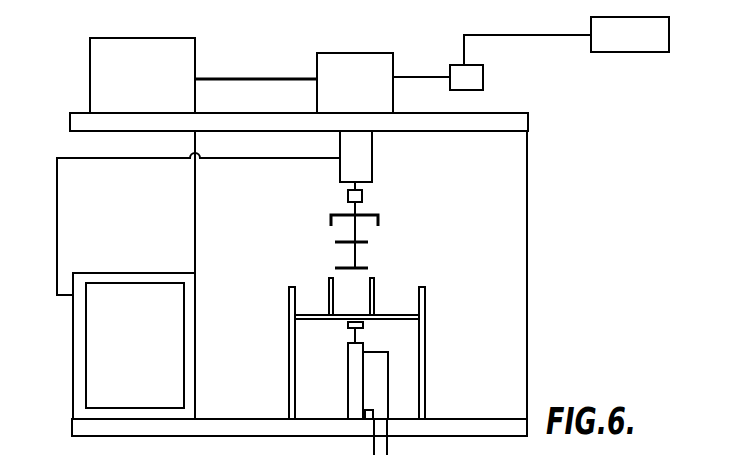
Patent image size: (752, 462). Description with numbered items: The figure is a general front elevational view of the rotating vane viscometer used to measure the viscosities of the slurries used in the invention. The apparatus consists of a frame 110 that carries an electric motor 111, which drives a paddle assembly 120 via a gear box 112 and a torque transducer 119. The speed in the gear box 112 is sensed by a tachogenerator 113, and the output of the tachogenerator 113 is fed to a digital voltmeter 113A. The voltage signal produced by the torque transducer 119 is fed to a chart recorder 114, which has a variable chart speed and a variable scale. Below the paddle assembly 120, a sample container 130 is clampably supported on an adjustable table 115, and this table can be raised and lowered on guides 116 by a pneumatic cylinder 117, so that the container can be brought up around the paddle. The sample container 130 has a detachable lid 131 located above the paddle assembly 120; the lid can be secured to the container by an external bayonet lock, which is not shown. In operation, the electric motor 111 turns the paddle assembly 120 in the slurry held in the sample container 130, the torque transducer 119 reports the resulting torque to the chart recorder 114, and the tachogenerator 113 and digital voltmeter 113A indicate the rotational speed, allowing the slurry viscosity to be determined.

The frame 110 is at (527, 197).
The electric motor 111 is at (144, 38).
The gear box 112 is at (360, 53).
The tachogenerator 113 is at (483, 77).
The digital voltmeter 113A is at (626, 41).
The chart recorder 114 is at (72, 354).
The adjustable table 115 is at (401, 319).
The guides 116 is at (425, 396).
The pneumatic cylinder 117 is at (347, 362).
The torque transducer 119 is at (372, 152).
The paddle assembly 120 is at (365, 257).
The sample container 130 is at (376, 302).
The detachable lid 131 is at (381, 221).